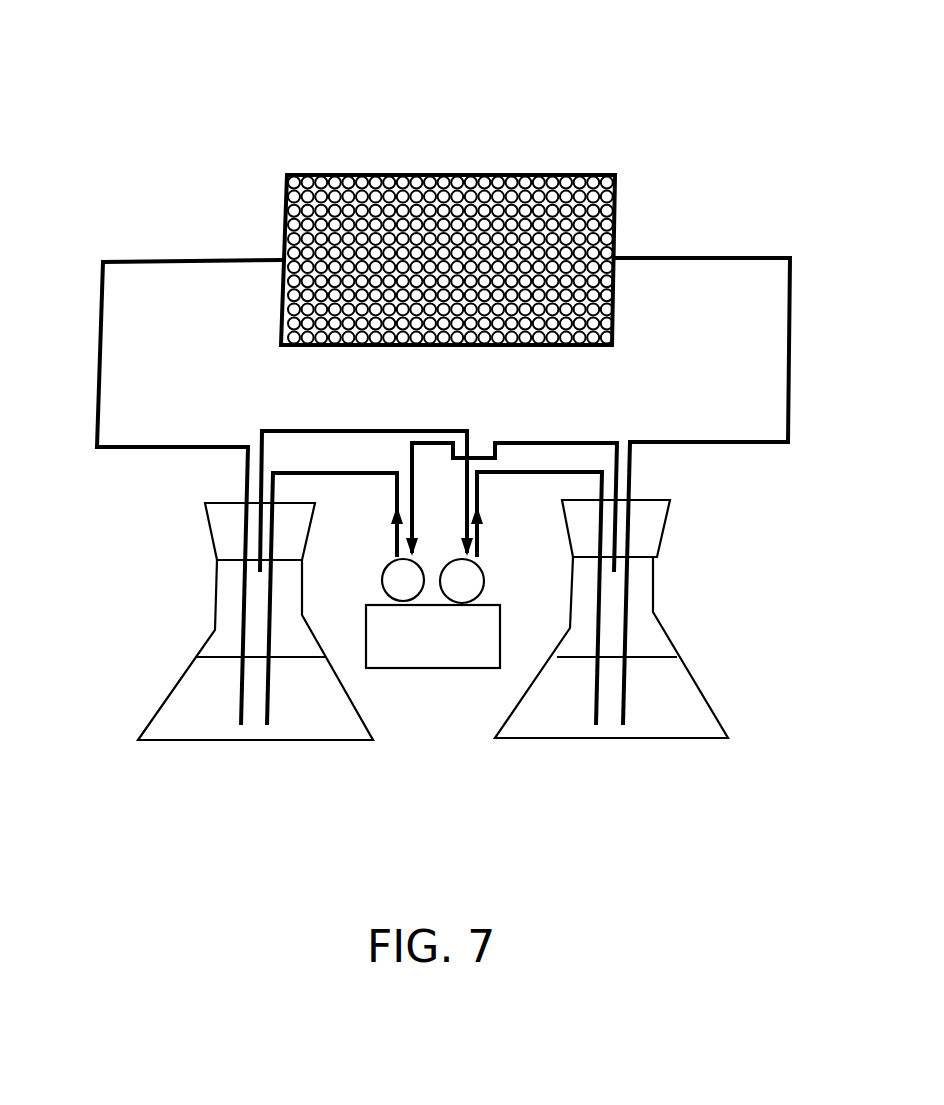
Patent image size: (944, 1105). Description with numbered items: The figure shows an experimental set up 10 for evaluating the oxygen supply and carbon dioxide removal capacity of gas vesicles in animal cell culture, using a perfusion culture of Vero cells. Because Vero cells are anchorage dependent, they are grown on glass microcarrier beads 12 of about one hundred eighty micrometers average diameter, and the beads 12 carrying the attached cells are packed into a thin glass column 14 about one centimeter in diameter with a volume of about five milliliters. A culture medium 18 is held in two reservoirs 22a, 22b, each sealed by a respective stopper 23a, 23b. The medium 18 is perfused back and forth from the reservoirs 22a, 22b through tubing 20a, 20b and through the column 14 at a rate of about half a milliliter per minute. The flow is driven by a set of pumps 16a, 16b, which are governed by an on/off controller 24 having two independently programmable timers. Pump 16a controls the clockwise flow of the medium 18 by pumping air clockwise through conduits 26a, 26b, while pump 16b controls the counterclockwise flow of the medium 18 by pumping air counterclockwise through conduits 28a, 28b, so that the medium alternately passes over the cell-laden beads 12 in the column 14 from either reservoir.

The experimental set up 10 is at (678, 115).
The glass microcarrier beads 12 is at (455, 182).
The thin glass column 14 is at (618, 213).
The pump 16a is at (397, 582).
The pump 16b is at (477, 580).
The culture medium 18 is at (195, 685).
The tubing 20a is at (103, 347).
The tubing 20b is at (788, 338).
The reservoir 22a is at (218, 742).
The reservoir 22b is at (650, 740).
The stopper 23a is at (222, 520).
The stopper 23b is at (655, 523).
The on/off controller 24 is at (438, 655).
The conduit 26a is at (308, 475).
The conduit 26b is at (540, 442).
The conduit 28a is at (305, 430).
The conduit 28b is at (530, 470).